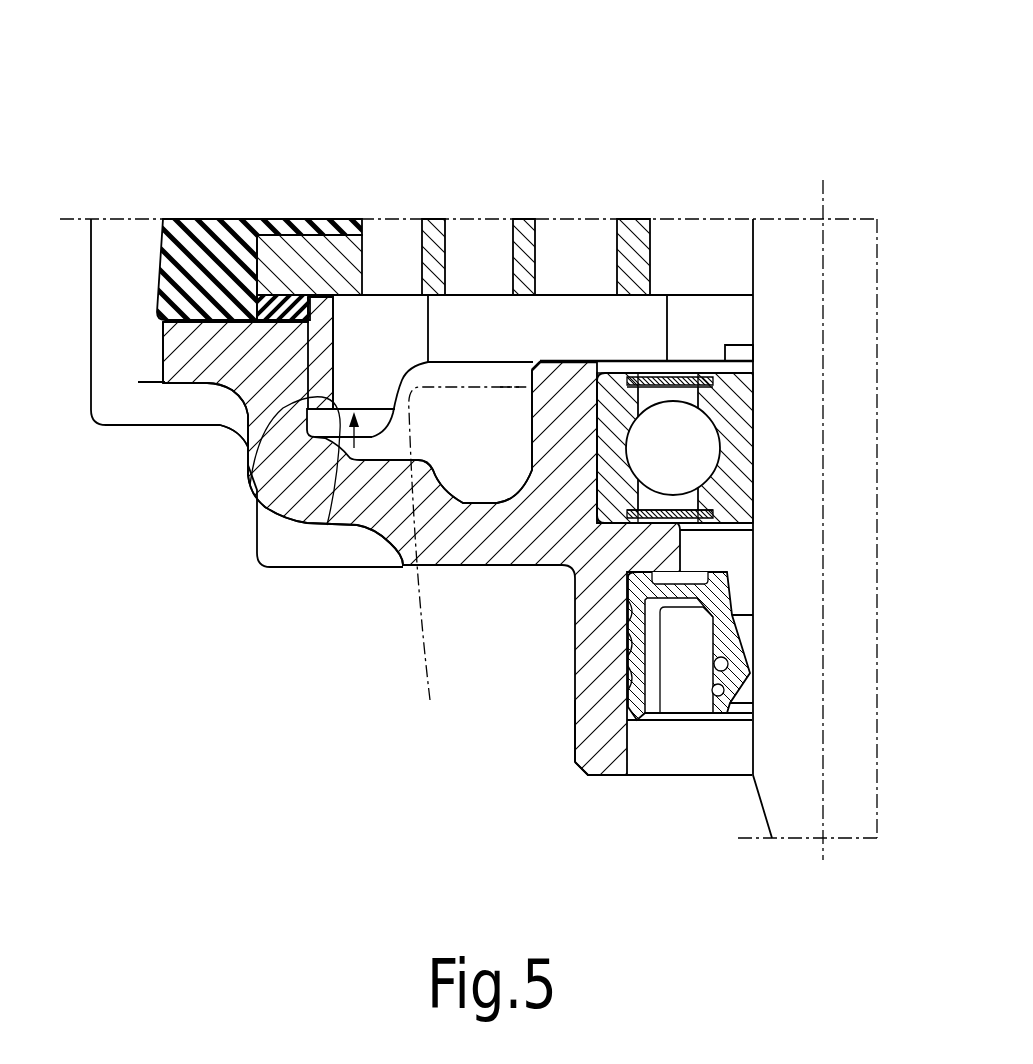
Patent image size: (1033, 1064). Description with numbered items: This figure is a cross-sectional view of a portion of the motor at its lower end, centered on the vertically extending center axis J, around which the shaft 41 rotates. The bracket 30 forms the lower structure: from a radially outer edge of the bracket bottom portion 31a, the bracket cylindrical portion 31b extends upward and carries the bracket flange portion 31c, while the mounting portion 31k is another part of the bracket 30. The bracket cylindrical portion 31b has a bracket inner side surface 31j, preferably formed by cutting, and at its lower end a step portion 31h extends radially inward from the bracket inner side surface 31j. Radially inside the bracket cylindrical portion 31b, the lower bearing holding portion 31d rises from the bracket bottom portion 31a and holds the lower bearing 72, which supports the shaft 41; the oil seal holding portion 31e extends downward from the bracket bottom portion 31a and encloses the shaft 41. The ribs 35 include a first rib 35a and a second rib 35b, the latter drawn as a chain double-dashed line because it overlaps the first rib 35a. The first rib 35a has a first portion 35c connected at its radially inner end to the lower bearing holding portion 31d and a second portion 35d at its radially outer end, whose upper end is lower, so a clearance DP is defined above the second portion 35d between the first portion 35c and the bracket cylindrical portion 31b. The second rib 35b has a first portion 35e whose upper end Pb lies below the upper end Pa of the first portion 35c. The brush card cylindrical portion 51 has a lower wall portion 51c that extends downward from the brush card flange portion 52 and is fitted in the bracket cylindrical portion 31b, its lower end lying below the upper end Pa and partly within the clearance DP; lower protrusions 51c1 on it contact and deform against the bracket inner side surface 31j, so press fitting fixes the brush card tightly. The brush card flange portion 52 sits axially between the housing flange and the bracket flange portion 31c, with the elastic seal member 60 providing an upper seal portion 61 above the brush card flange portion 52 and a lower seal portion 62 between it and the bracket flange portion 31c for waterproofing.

The bracket 30 is at (424, 521).
The bracket bottom portion 31a is at (357, 488).
The bracket cylindrical portion 31b is at (262, 410).
The bracket flange portion 31c is at (180, 382).
The lower bearing holding portion 31d is at (567, 397).
The oil seal holding portion 31e is at (600, 728).
The step portion 31h is at (318, 448).
The bracket inner side surface 31j is at (327, 525).
The mounting portion 31k is at (490, 537).
The ribs 35 is at (420, 411).
The first rib 35a is at (420, 411).
The second rib 35b is at (440, 564).
The first portion of the first rib 35c is at (457, 377).
The second portion of the first rib 35d is at (367, 447).
The first portion of the second rib 35e is at (440, 564).
The shaft 41 is at (792, 267).
The brush card cylindrical portion 51 is at (247, 359).
The lower wall portion 51c is at (250, 483).
The lower protrusion 51c1 is at (308, 392).
The brush card flange portion 52 is at (302, 272).
The seal member 60 is at (227, 204).
The upper seal portion 61 is at (205, 268).
The lower seal portion 62 is at (277, 307).
The lower bearing 72 is at (653, 457).
The clearance DP is at (354, 448).
The center axis J is at (826, 250).
The upper end of the first portion of the first rib Pa is at (487, 363).
The upper end of the first portion of the second rib Pb is at (510, 385).